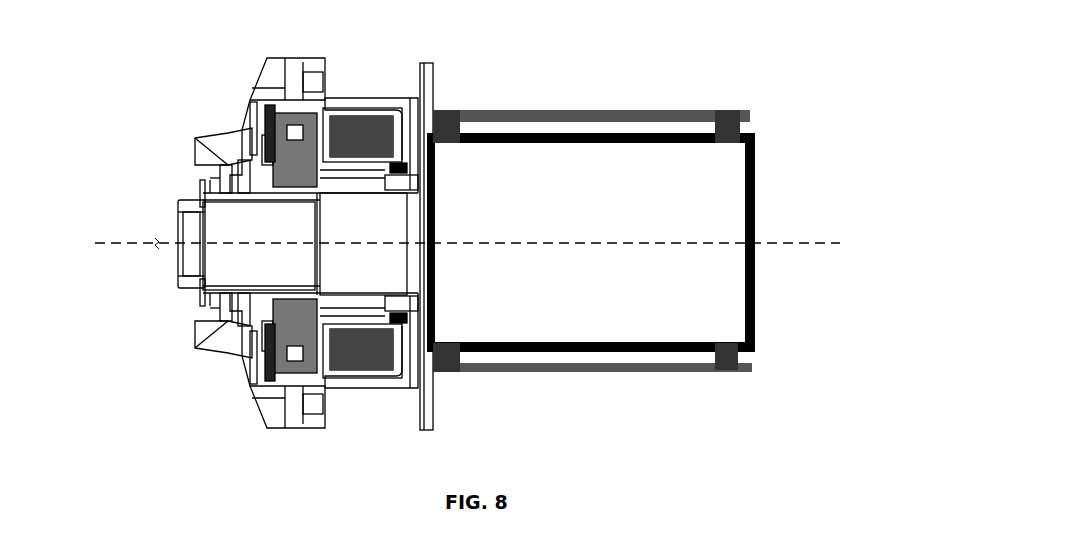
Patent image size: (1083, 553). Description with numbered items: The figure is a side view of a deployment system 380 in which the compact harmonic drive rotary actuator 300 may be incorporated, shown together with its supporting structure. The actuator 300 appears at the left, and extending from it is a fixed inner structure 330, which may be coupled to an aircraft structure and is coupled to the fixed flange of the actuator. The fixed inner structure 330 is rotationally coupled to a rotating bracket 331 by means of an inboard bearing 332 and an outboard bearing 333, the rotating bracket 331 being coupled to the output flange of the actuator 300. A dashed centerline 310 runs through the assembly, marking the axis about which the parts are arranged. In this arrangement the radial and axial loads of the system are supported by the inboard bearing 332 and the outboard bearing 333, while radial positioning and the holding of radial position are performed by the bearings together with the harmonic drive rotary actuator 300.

The compact harmonic drive rotary actuator 300 is at (262, 73).
The axis of rotation 310 is at (142, 243).
The fixed inner structure 330 is at (757, 153).
The rotating bracket 331 is at (637, 371).
The inboard bearing 332 is at (727, 110).
The outboard bearing 333 is at (437, 112).
The deployment system 380 is at (903, 120).